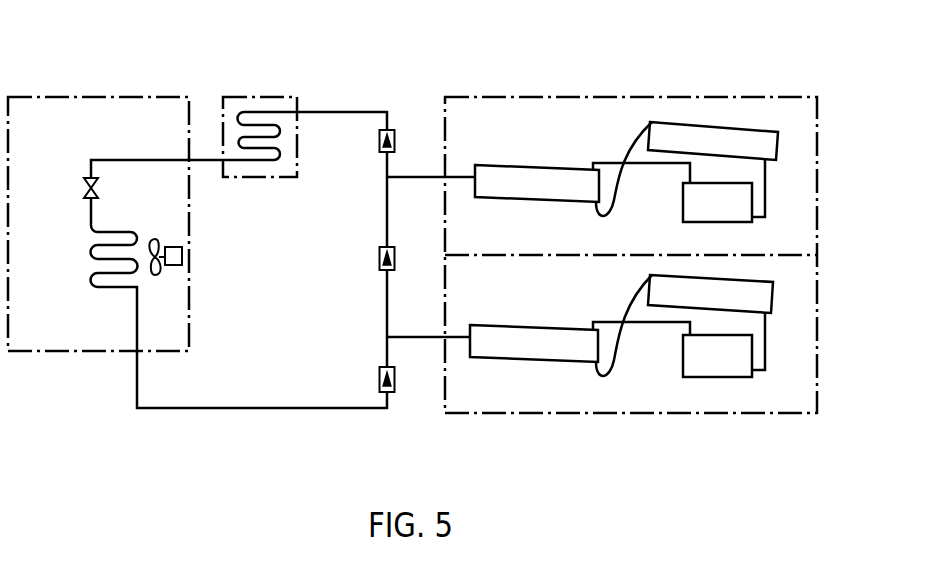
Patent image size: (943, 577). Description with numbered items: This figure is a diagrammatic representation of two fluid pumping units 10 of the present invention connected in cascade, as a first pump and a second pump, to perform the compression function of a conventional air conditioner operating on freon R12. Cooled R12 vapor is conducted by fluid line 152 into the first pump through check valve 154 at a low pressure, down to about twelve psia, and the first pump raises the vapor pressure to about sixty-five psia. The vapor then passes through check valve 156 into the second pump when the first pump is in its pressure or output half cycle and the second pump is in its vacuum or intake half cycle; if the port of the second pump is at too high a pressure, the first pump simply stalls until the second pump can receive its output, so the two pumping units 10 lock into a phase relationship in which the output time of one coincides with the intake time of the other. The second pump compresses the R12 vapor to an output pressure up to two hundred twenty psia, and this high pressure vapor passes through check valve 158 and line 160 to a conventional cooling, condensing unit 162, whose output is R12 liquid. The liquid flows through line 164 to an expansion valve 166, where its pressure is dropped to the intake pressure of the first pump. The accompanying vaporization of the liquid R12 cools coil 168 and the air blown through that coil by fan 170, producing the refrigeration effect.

The fluid pumping unit 10 is at (655, 98).
The fluid line 152 is at (280, 408).
The check valve 154 is at (379, 378).
The check valve 156 is at (379, 262).
The check valve 158 is at (379, 137).
The line 160 is at (350, 112).
The cooling, condensing unit 162 is at (285, 97).
The line 164 is at (171, 160).
The expansion valve 166 is at (84, 183).
The coil 168 is at (93, 252).
The fan 170 is at (182, 246).